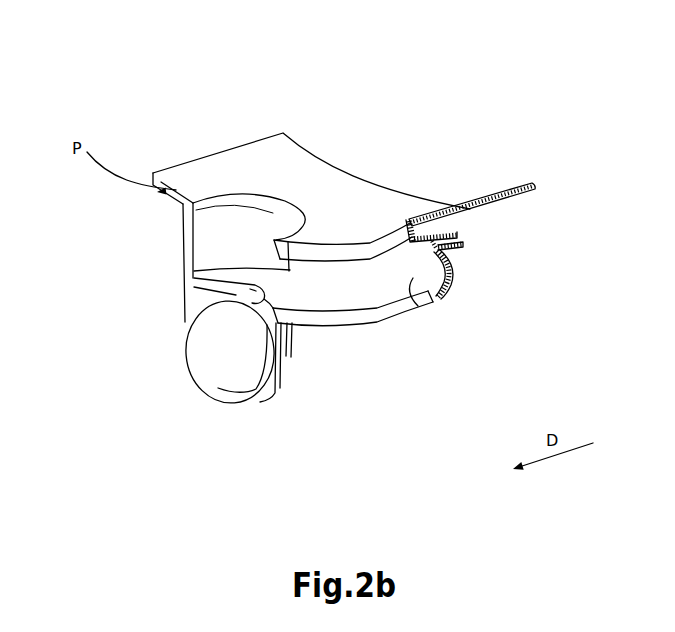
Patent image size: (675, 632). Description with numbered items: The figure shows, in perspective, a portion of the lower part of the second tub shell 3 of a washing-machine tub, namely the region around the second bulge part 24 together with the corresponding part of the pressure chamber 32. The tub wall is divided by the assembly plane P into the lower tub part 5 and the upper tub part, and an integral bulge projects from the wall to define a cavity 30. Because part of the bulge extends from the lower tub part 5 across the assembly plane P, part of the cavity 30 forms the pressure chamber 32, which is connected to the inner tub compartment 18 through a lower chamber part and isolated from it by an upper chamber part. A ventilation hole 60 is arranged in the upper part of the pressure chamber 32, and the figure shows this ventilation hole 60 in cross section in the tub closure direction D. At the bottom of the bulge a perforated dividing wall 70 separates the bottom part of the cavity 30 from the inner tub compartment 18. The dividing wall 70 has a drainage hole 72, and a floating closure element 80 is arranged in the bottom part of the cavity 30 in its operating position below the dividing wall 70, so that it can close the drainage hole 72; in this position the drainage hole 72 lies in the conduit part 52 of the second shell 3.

The second tub shell 3 is at (310, 152).
The lower tub part 5 is at (336, 198).
The cavity 30 is at (242, 230).
The inner tub compartment 18 is at (507, 202).
The dividing wall 70 is at (220, 272).
The drainage hole 72 is at (224, 283).
The floating closure element 80 is at (190, 366).
The ventilation hole 60 is at (453, 240).
The pressure chamber 32 is at (422, 310).
The second bulge part 24 is at (292, 358).
The conduit part 52 is at (247, 294).